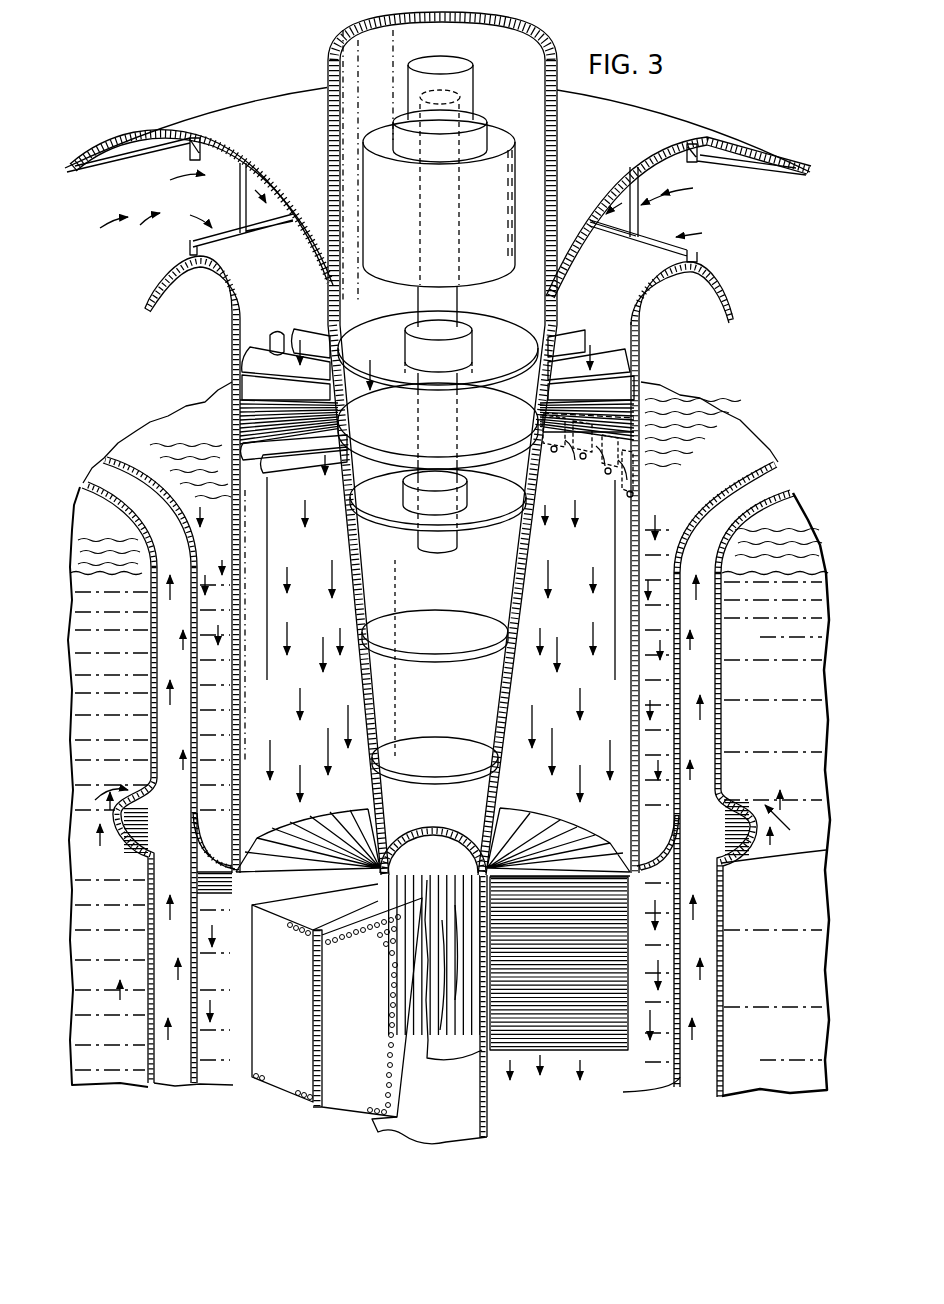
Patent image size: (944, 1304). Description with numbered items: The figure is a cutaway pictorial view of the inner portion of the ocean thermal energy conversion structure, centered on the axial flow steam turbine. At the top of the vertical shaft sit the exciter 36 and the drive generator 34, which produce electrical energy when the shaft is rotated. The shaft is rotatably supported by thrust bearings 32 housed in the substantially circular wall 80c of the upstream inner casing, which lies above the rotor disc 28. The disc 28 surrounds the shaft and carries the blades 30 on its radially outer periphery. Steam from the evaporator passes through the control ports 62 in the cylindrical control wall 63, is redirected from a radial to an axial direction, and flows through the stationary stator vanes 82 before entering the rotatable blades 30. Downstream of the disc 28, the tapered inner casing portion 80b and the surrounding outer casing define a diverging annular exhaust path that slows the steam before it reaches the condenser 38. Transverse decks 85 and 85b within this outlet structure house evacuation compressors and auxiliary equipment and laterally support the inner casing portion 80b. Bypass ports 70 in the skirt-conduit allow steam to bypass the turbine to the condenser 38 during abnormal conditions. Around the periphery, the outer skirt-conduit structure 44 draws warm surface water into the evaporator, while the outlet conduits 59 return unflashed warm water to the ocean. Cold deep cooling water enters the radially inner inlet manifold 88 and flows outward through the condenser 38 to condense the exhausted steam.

The disc portion 28 is at (528, 432).
The blades 30 is at (627, 430).
The thrust bearings 32 is at (470, 488).
The generator 34 is at (502, 190).
The exciter 36 is at (470, 86).
The condenser 38 is at (364, 1022).
The skirt-conduit structure 44 is at (172, 670).
The outlet conduits 59 is at (222, 698).
The control ports 62 is at (268, 198).
The control wall 63 is at (255, 164).
The bypass ports 70 is at (613, 460).
The inner casing portion 80b is at (506, 528).
The circular wall 80c is at (378, 330).
The stator vanes 82 is at (300, 335).
The transverse decks 85 is at (437, 612).
The transverse deck 85b is at (455, 745).
The inlet manifold 88 is at (455, 845).